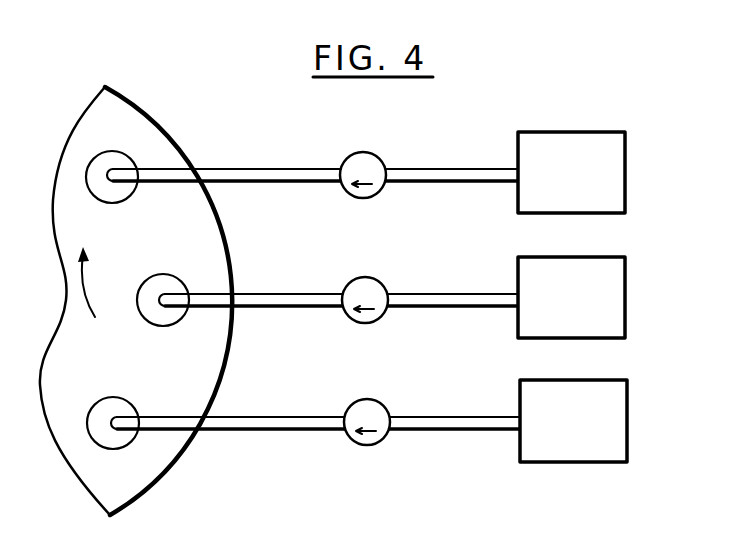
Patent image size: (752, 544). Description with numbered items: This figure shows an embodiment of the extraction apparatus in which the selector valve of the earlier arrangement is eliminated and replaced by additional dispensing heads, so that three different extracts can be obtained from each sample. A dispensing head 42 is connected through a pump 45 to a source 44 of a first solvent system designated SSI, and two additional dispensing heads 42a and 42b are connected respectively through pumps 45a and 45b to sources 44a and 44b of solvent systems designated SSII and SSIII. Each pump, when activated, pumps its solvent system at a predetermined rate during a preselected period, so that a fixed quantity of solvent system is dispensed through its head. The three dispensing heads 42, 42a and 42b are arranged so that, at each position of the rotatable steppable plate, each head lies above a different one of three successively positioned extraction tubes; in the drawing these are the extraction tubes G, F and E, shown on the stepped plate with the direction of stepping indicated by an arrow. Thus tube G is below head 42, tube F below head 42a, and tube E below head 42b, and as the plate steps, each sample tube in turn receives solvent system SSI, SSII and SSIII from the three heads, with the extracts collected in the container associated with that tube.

The dispensing head 42 is at (120, 424).
The dispensing head 42a is at (170, 296).
The dispensing head 42b is at (116, 174).
The source of solvent system 44 is at (527, 443).
The source of solvent system 44a is at (522, 268).
The source of solvent system 44b is at (522, 141).
The pump 45 is at (366, 445).
The pump 45a is at (365, 277).
The pump 45b is at (365, 152).
The extraction tube E is at (127, 194).
The extraction tube F is at (172, 320).
The extraction tube G is at (127, 440).